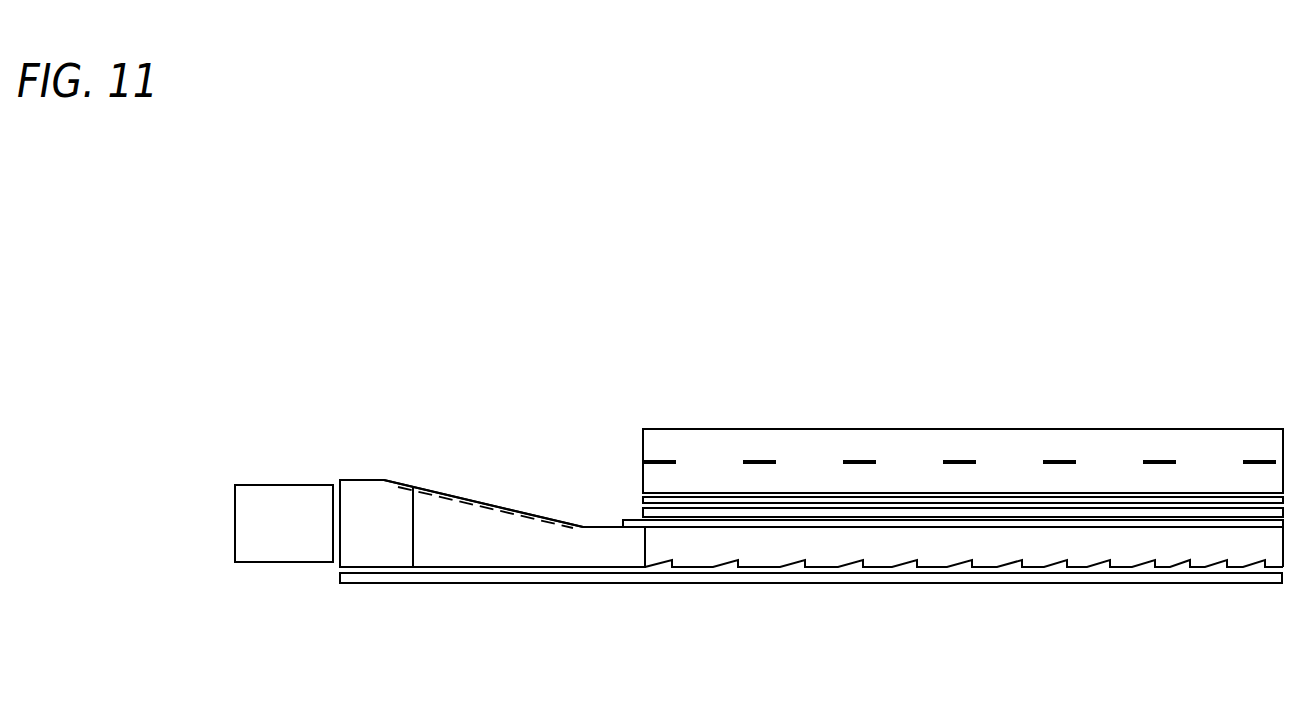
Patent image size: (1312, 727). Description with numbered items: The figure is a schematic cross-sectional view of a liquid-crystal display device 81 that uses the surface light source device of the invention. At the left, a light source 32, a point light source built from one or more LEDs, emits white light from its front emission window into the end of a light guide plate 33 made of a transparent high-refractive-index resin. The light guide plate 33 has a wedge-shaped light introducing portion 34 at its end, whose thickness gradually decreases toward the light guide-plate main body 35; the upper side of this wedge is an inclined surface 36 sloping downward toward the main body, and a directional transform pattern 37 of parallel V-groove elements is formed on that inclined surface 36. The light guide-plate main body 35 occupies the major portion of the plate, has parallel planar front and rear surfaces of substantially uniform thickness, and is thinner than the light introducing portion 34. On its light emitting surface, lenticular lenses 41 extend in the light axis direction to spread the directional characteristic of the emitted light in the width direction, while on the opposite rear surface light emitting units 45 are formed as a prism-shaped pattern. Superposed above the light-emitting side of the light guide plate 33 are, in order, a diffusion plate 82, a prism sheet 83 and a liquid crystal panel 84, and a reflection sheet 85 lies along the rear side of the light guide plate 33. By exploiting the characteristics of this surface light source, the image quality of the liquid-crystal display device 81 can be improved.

The light source 32 is at (278, 495).
The light guide plate 33 is at (838, 550).
The light introducing portion 34 is at (462, 540).
The light guide-plate main body 35 is at (947, 550).
The inclined surface 36 is at (458, 502).
The directional transform pattern 37 is at (485, 481).
The lenticular lenses 41 is at (1048, 527).
The light emitting units 45 is at (1180, 565).
The liquid-crystal display device 81 is at (963, 415).
The diffusion plate 82 is at (763, 513).
The prism sheet 83 is at (840, 500).
The liquid crystal panel 84 is at (995, 465).
The reflection sheet 85 is at (646, 578).